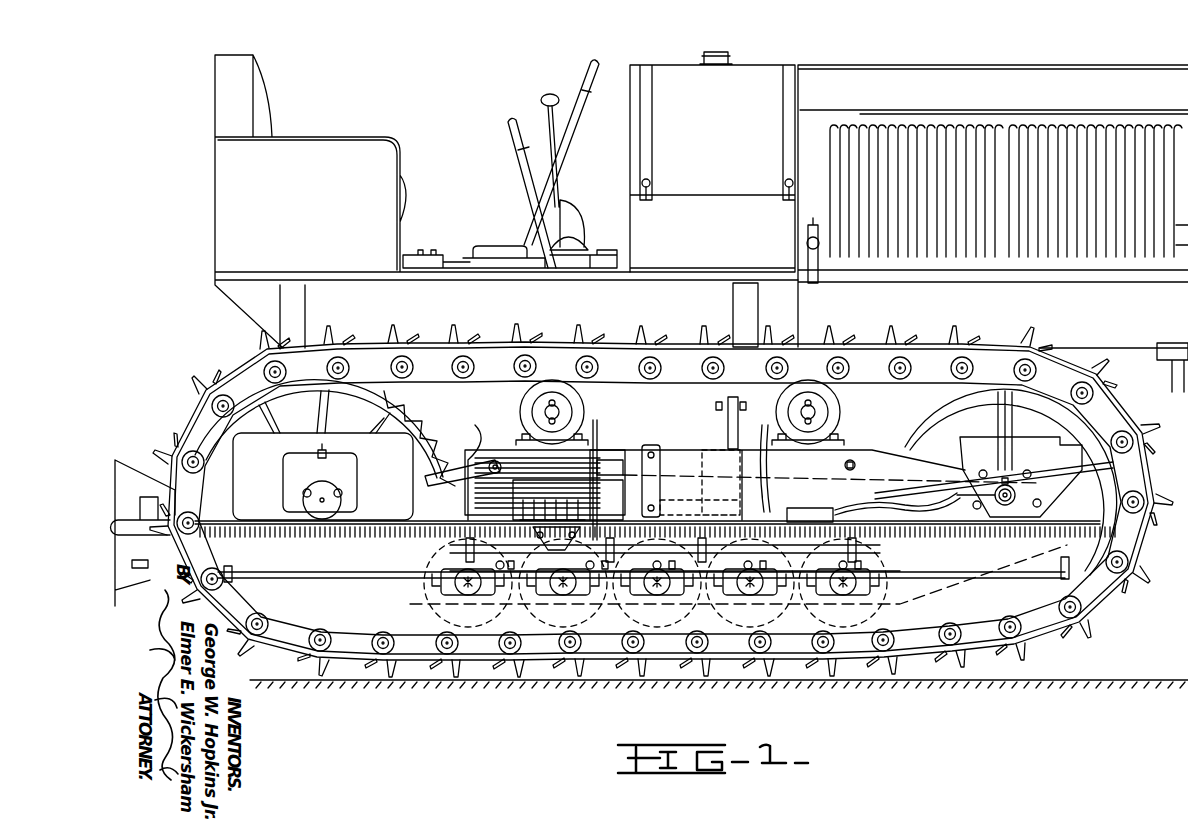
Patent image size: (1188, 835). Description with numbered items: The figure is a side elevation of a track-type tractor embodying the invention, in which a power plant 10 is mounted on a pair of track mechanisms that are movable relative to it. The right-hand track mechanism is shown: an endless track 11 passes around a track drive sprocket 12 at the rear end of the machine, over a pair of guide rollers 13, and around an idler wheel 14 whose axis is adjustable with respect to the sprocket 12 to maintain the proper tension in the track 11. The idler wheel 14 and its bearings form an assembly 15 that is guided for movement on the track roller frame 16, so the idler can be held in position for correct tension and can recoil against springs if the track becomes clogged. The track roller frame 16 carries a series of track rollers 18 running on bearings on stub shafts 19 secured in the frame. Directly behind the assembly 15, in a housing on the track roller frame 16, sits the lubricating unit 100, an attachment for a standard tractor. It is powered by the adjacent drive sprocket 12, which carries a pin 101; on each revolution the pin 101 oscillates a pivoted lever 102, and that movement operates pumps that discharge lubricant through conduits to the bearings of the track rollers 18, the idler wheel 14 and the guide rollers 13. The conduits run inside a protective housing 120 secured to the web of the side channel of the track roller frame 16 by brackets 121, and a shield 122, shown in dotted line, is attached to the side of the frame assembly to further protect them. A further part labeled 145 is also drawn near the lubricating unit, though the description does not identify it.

The power plant 10 is at (950, 321).
The endless track 11 is at (1148, 534).
The track drive sprocket 12 is at (268, 430).
The guide rollers 13 is at (568, 372).
The idler wheel 14 is at (1068, 470).
The idler wheel assembly 15 is at (858, 450).
The track roller frame 16 is at (985, 565).
The track rollers 18 is at (832, 615).
The stub shafts 19 is at (745, 592).
The lubricating unit 100 is at (585, 490).
The pin 101 is at (425, 478).
The lever 102 is at (472, 426).
The protective housing 120 is at (835, 550).
The brackets 121 is at (455, 553).
The shield 122 is at (395, 597).
The bracket 145 is at (628, 467).